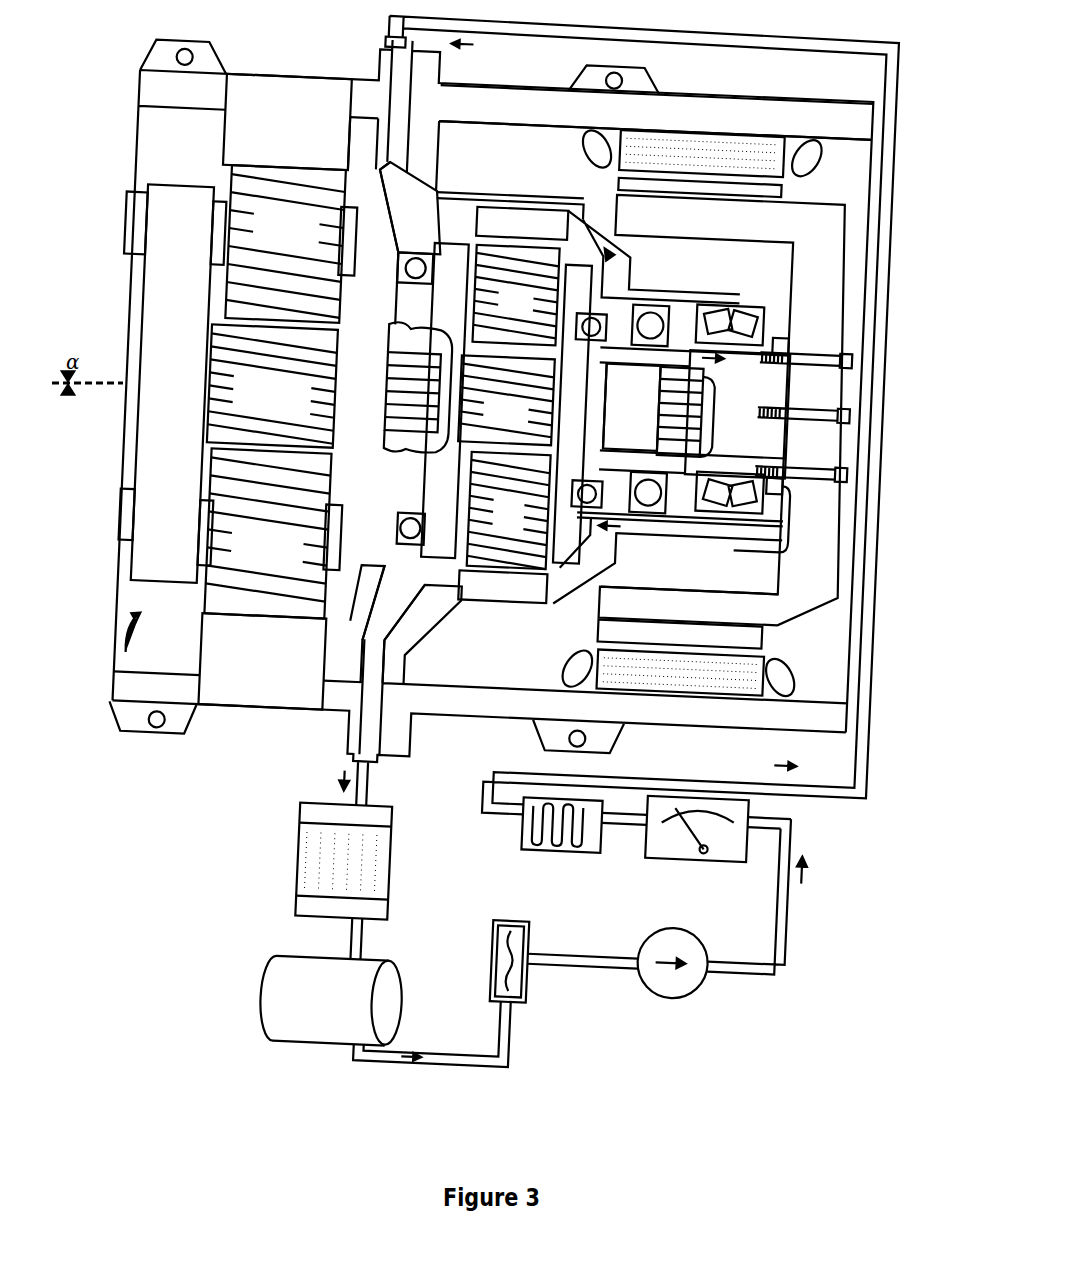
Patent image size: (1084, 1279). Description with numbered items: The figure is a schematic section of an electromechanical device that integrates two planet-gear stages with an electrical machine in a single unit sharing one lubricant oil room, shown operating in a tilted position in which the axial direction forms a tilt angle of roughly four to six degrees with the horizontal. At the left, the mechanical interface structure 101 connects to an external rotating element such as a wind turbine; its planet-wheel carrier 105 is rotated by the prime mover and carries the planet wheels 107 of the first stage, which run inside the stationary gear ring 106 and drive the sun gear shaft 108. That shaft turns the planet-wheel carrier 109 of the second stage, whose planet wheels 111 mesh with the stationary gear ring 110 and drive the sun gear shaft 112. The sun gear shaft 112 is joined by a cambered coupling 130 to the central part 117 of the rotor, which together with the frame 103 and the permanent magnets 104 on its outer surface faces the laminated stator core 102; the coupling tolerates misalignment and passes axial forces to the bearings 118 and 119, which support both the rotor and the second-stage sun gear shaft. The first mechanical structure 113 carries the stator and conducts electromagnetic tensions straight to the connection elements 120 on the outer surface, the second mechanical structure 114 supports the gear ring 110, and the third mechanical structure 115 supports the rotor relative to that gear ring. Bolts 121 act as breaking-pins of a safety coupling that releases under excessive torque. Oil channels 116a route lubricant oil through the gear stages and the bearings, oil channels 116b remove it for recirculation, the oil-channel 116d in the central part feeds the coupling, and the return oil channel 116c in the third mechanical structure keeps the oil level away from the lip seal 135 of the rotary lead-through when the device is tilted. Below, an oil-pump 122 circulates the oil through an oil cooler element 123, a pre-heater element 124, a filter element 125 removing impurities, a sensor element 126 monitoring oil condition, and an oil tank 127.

The mechanical interface structure 101 is at (503, 417).
The laminated stator core 102 is at (690, 413).
The frame 103 is at (702, 582).
The permanent magnets 104 is at (776, 180).
The planet-wheel carrier 105 is at (168, 384).
The gear ring 106 is at (274, 392).
The planet wheels 107 is at (281, 392).
The sun gear shaft 108 is at (331, 348).
The planet-wheel carrier 109 is at (444, 246).
The gear ring 110 is at (520, 208).
The planet wheels 111 is at (528, 408).
The sun gear shaft 112 is at (559, 403).
The first mechanical structure 113 is at (756, 90).
The second mechanical structure 114 is at (400, 170).
The third mechanical structure 115 is at (603, 262).
The oil channels 116a is at (490, 194).
The oil channels 116b is at (402, 602).
The return oil channel 116c is at (612, 532).
The oil-channel 116d is at (633, 407).
The central part 117 is at (723, 412).
The bearing 118 is at (688, 296).
The bearing 119 is at (762, 292).
The connection elements 120 is at (212, 72).
The bolts 121 is at (790, 310).
The oil-pump 122 is at (697, 990).
The oil cooler element 123 is at (318, 862).
The pre-heater element 124 is at (580, 848).
The filter element 125 is at (528, 920).
The sensor element 126 is at (732, 851).
The oil tank 127 is at (385, 1011).
The coupling 130 is at (705, 420).
The lip seal 135 is at (780, 534).